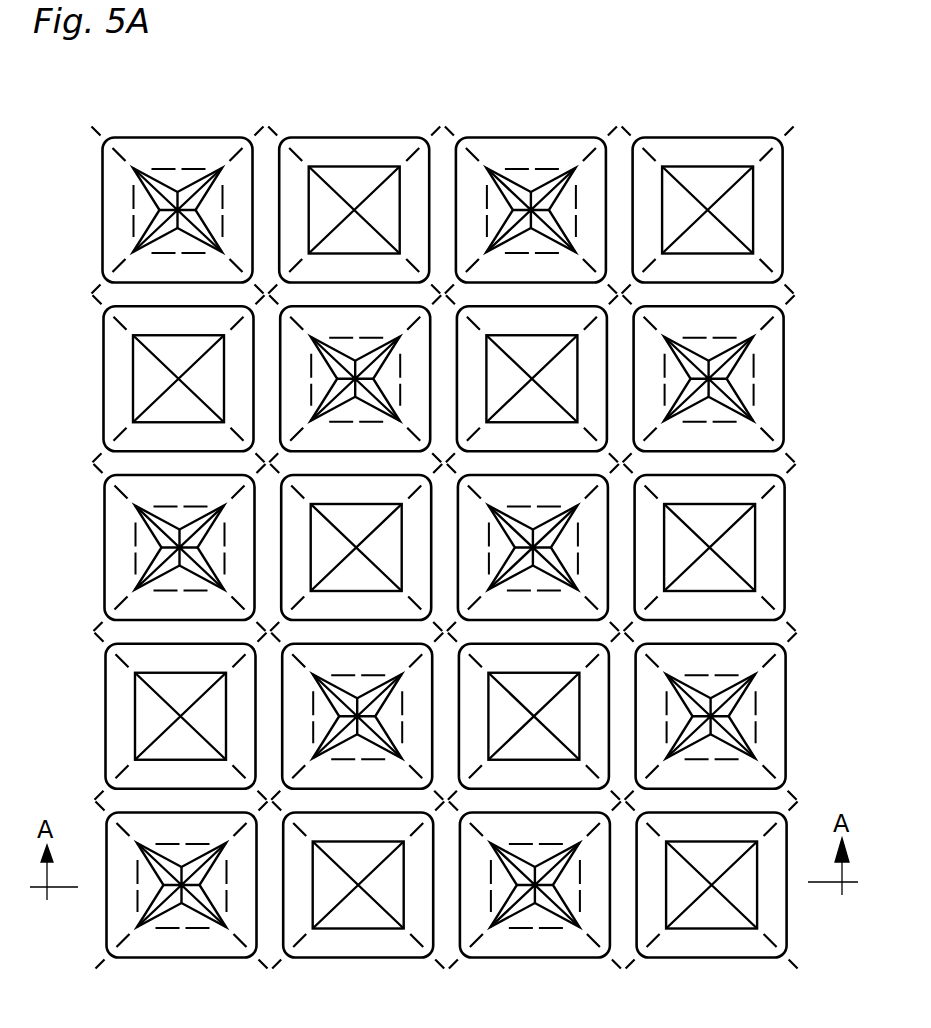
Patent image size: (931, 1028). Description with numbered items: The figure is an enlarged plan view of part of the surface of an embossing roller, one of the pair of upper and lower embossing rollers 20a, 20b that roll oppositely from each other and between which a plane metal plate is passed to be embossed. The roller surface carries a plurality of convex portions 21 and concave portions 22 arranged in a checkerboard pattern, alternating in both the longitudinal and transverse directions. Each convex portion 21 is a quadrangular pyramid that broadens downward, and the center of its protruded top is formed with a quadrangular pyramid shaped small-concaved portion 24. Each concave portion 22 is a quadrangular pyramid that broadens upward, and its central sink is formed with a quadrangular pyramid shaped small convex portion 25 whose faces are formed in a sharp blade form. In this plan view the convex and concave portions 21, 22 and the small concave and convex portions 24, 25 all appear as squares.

The upper embossing roller 20a is at (445, 535).
The lower embossing roller 20b is at (445, 578).
The convex portion 21 is at (418, 577).
The concave portion 22 is at (445, 578).
The small-concaved portion 24 is at (360, 915).
The small convex portion 25 is at (168, 903).